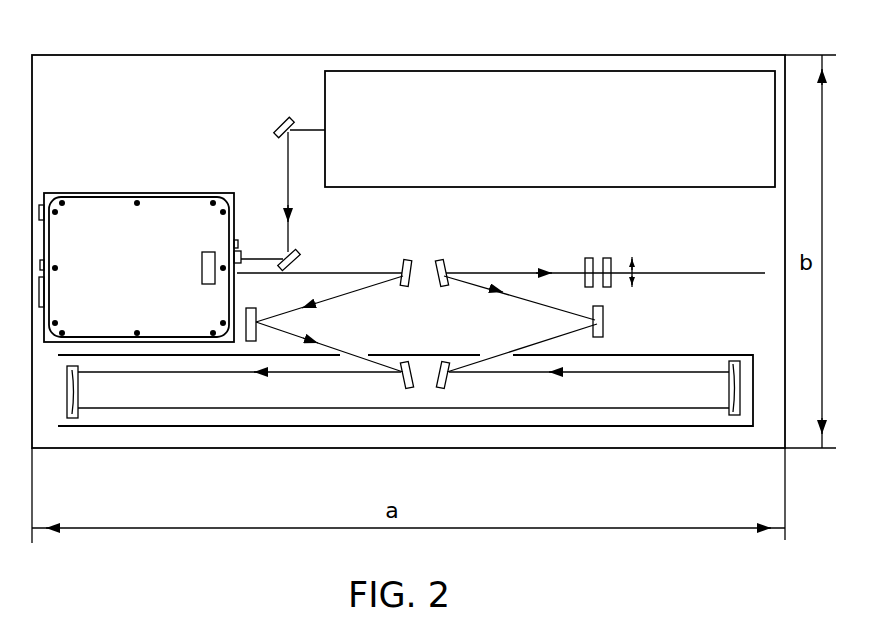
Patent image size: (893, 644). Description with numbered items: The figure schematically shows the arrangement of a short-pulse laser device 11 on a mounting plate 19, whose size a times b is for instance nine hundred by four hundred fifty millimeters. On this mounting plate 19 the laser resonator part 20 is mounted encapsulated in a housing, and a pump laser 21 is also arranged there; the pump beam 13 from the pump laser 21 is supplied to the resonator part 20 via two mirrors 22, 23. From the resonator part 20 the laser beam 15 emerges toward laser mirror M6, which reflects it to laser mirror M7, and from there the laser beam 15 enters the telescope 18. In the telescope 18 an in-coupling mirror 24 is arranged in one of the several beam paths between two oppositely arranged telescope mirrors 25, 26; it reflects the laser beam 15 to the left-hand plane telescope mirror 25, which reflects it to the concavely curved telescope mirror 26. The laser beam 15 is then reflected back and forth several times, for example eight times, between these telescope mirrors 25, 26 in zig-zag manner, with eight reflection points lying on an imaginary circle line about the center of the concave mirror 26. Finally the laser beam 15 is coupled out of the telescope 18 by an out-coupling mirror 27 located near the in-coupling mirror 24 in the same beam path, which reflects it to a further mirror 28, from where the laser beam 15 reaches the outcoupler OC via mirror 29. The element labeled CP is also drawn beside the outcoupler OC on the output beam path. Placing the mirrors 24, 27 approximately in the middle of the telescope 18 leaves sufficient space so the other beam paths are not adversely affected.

The laser device 11 is at (167, 162).
The pump beam 13 is at (286, 165).
The laser beam 15 is at (513, 268).
The telescope 18 is at (715, 353).
The mounting plate 19 is at (578, 55).
The laser resonator part 20 is at (123, 192).
The pump laser 21 is at (325, 92).
The mirror 22 is at (276, 126).
The mirror 23 is at (298, 253).
The in-coupling mirror 24 is at (405, 363).
The plane telescope mirror 25 is at (75, 395).
The concavely curved telescope mirror 26 is at (732, 413).
The out-coupling mirror 27 is at (445, 363).
The mirror 28 is at (605, 327).
The mirror 29 is at (445, 262).
The laser mirror M6 is at (402, 260).
The laser mirror M7 is at (253, 312).
The outcoupler OC is at (589, 258).
The compensation plate CP is at (613, 267).